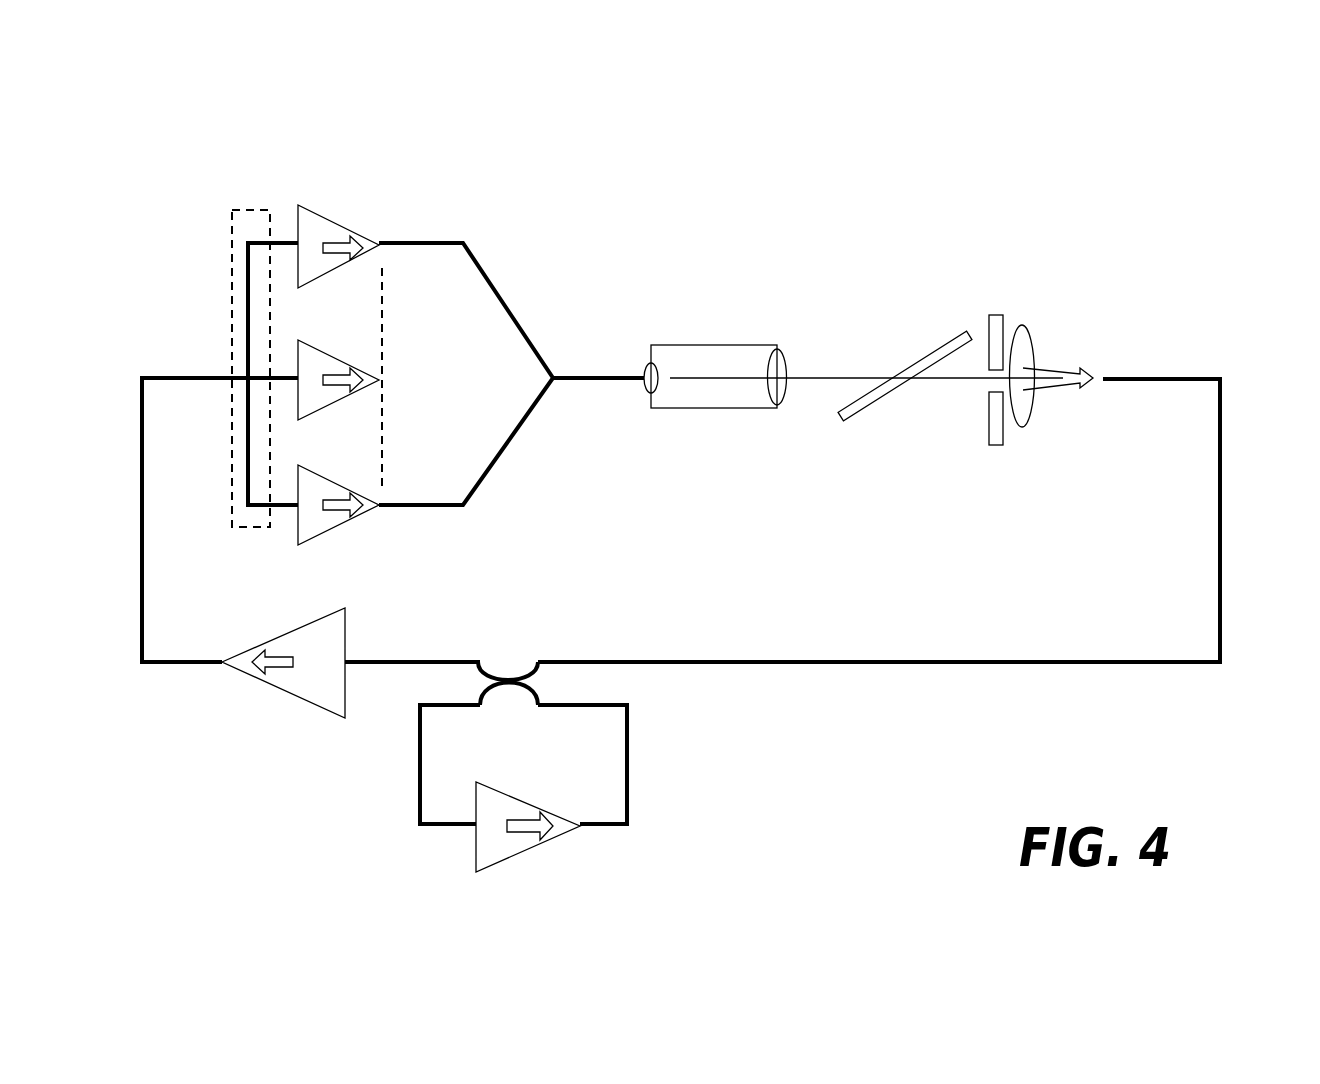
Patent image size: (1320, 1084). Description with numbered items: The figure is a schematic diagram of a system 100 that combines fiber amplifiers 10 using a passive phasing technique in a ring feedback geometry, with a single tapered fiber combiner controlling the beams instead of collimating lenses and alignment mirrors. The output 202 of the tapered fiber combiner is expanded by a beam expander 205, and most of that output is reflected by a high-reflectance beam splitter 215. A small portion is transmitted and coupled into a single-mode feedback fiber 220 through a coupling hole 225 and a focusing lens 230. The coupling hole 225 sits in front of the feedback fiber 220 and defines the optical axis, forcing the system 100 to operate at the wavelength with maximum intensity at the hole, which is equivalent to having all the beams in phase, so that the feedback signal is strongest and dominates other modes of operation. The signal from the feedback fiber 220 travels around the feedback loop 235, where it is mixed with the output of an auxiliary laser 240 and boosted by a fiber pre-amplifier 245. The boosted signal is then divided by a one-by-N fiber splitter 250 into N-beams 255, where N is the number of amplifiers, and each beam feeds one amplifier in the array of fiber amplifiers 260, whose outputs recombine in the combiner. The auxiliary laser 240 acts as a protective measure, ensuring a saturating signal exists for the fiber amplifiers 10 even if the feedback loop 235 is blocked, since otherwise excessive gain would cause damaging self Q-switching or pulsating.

The system 100 is at (726, 174).
The fiber amplifiers 10 is at (343, 207).
The output of tapered fiber combiner 202 is at (592, 356).
The beam expander 205 is at (731, 345).
The high-reflectance beam splitter 215 is at (961, 324).
The single-mode feedback fiber 220 is at (1152, 359).
The coupling hole 225 is at (968, 418).
The focusing lens 230 is at (1047, 412).
The feedback loop 235 is at (1220, 517).
The auxiliary laser 240 is at (559, 847).
The fiber pre-amplifier 245 is at (289, 709).
The 1×N fiber splitter 250 is at (212, 318).
The N-beams 255 is at (287, 242).
The array of fiber amplifiers 260 is at (423, 243).